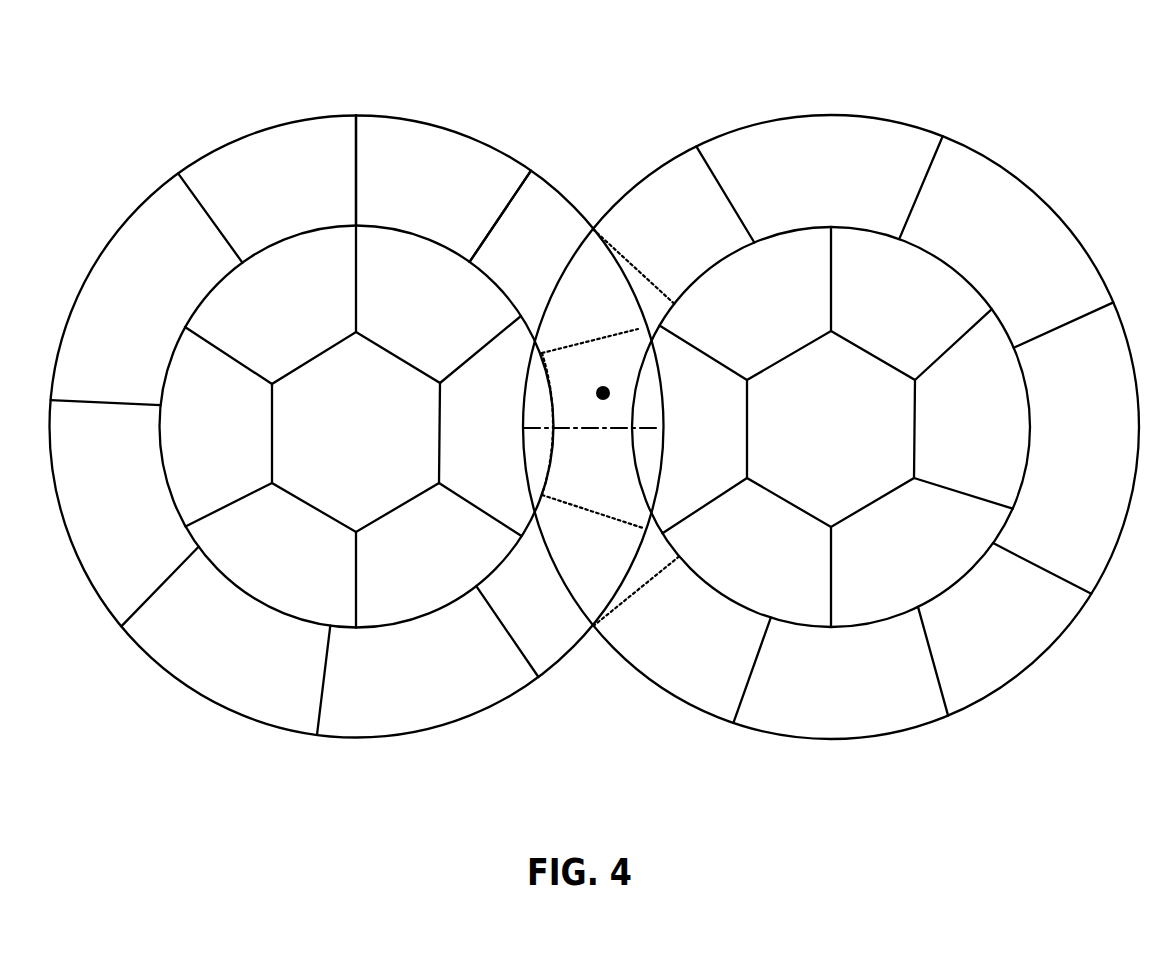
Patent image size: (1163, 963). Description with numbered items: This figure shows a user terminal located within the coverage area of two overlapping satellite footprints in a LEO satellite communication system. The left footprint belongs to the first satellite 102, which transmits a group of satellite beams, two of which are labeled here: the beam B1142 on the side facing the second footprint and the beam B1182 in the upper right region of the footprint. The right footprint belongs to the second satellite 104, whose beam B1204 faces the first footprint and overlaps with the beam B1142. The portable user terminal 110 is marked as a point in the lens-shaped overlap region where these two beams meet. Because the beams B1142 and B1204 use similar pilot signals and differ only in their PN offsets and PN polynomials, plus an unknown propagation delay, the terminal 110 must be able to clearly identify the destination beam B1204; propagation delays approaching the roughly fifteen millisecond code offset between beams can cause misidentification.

The first satellite 102 is at (212, 668).
The second satellite 104 is at (978, 668).
The portable user terminal 110 is at (592, 407).
The satellite beam B114_2 B1142 is at (593, 377).
The satellite beam B118_2 B1182 is at (443, 189).
The satellite beam B120_4 B1204 is at (613, 377).